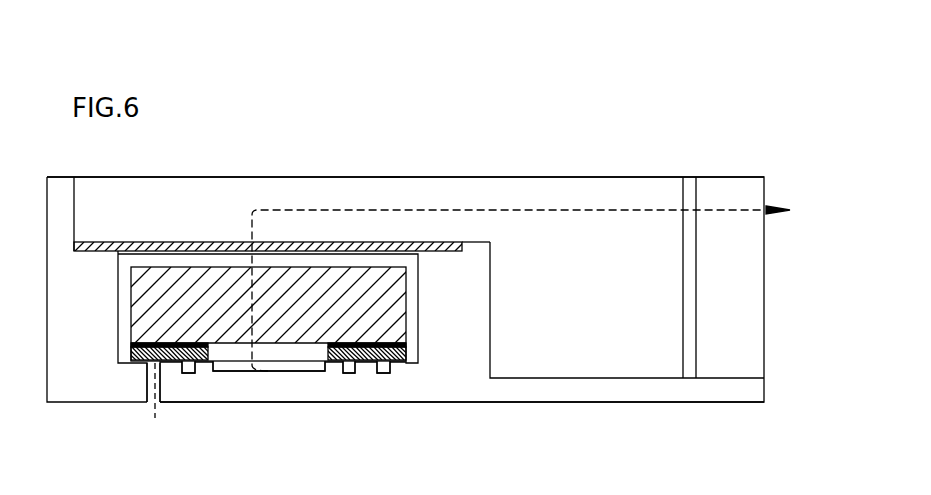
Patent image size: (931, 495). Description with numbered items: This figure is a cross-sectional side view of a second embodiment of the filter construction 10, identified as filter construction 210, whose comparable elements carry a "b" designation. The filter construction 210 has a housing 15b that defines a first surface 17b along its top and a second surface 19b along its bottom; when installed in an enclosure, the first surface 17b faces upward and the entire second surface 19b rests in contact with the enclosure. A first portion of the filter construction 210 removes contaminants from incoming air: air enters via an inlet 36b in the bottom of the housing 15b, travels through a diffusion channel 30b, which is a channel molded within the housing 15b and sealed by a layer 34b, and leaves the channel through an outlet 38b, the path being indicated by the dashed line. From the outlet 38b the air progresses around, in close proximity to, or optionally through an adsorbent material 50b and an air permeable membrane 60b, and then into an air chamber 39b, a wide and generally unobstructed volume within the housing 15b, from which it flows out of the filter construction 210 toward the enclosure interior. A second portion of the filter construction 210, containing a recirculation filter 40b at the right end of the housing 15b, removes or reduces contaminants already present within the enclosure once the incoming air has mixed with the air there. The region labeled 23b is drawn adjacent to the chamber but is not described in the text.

The filter construction 10 is at (556, 55).
The filter construction 210 is at (552, 133).
The housing 15b is at (642, 404).
The first surface 17b is at (153, 177).
The air chamber 39b is at (382, 176).
The second surface 19b is at (523, 404).
The air permeable membrane 60b is at (113, 242).
The cavity 23b is at (490, 297).
The adsorbent material 50b is at (131, 298).
The layer 34b is at (406, 350).
The outlet 38b is at (323, 366).
The diffusion channel 30b is at (382, 375).
The inlet 36b is at (160, 397).
The recirculation filter 40b is at (696, 352).